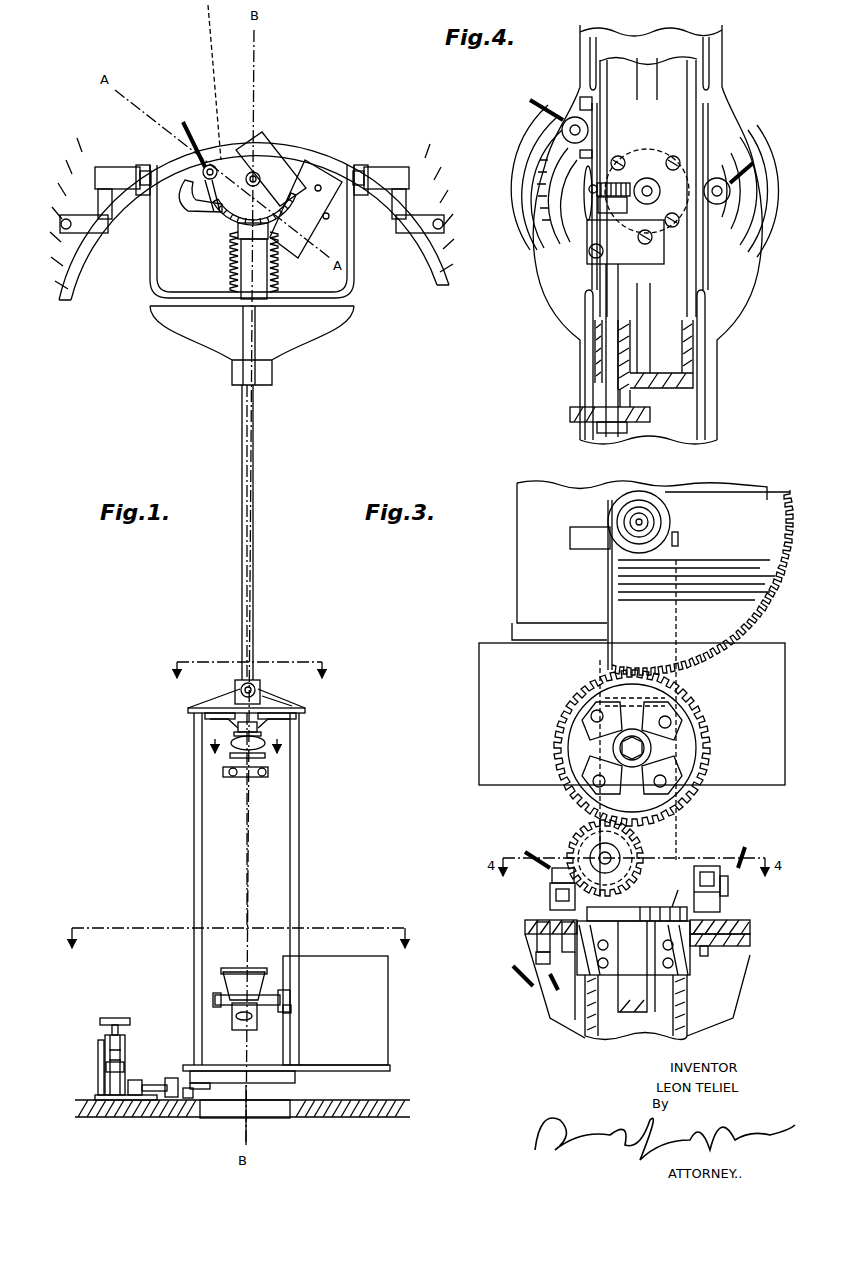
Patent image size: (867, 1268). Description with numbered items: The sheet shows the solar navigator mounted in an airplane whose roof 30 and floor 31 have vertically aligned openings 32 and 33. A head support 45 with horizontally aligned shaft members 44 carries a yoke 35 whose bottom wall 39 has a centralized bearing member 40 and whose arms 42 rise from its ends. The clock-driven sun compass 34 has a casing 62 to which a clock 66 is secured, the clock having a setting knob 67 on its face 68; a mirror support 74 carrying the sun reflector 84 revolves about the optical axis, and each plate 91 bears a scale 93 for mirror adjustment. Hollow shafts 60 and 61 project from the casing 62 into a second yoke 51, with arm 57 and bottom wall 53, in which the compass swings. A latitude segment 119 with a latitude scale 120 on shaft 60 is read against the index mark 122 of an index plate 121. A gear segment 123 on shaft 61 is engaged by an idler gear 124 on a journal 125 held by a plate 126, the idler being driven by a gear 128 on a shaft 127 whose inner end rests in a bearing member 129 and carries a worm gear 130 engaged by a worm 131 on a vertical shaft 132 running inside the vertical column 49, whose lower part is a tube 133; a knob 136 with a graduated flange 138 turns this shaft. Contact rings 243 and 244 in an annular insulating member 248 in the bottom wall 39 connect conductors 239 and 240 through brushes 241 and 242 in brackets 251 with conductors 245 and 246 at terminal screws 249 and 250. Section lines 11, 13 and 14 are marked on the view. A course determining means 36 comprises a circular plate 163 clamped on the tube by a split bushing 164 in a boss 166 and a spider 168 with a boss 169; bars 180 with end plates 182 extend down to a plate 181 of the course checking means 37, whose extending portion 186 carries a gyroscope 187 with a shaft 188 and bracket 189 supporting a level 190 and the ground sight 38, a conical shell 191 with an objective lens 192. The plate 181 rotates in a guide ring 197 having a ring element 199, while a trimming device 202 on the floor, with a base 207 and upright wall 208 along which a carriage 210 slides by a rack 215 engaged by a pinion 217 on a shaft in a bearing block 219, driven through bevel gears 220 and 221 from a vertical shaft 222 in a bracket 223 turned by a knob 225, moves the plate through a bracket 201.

In FIG. 1, the roof 30 is at (430, 62).
In FIG. 1, the opening 32 is at (352, 60).
In FIG. 1, the shaft members 44 is at (146, 168).
In FIG. 1, the head support 45 is at (100, 199).
In FIG. 1, the arms 42 is at (152, 240).
In FIG. 1, the yoke 35 is at (330, 300).
In FIG. 1, the bottom wall 39 is at (305, 302).
In FIG. 4, the bottom wall 39 is at (744, 234).
In FIG. 3, the bottom wall 39 is at (748, 958).
In FIG. 1, the bearing member 40 is at (240, 340).
In FIG. 1, the vertical column 49 is at (254, 545).
In FIG. 1, the tube 133 is at (240, 600).
In FIG. 1, the hollow shaft 60 is at (256, 172).
In FIG. 1, the sun compass 34 is at (290, 185).
In FIG. 1, the casing 62 is at (276, 162).
In FIG. 3, the casing 62 is at (526, 557).
In FIG. 1, the clock 66 is at (322, 178).
In FIG. 3, the clock 66 is at (490, 662).
In FIG. 1, the setting knob 67 is at (310, 187).
In FIG. 1, the face 68 is at (327, 222).
In FIG. 1, the latitude scale 120 is at (240, 230).
In FIG. 1, the index plate 121 is at (238, 262).
In FIG. 1, the index mark 122 is at (272, 255).
In FIG. 1, the mirror support 74 is at (186, 164).
In FIG. 1, the mirror 84 is at (212, 164).
In FIG. 1, the plate 91 is at (215, 214).
In FIG. 1, the scale 93 is at (192, 212).
In FIG. 1, the latitude segment 119 is at (218, 140).
In FIG. 1, the section line 11- 11 is at (249, 668).
In FIG. 1, the boss 169 is at (237, 684).
In FIG. 1, the boss 166 is at (218, 700).
In FIG. 1, the spider 168 is at (276, 702).
In FIG. 1, the bars 180 is at (194, 824).
In FIG. 1, the plates 182 is at (300, 712).
In FIG. 1, the course determining means 36 is at (208, 721).
In FIG. 1, the section line 13- 13 is at (247, 738).
In FIG. 1, the circular plate 163 is at (262, 718).
In FIG. 1, the split bushing 164 is at (264, 742).
In FIG. 1, the flange 138 is at (224, 764).
In FIG. 1, the knob 136 is at (254, 778).
In FIG. 1, the course checking means 37 is at (226, 906).
In FIG. 1, the section line 14- 14 is at (242, 939).
In FIG. 1, the gyroscope 187 is at (388, 988).
In FIG. 1, the ground sight 38 is at (230, 980).
In FIG. 1, the conical shell 191 is at (236, 970).
In FIG. 1, the objective lens 192 is at (251, 1029).
In FIG. 1, the level 190 is at (214, 996).
In FIG. 1, the bracket 189 is at (252, 1000).
In FIG. 1, the shaft 188 is at (290, 1012).
In FIG. 1, the plate 181 is at (222, 1064).
In FIG. 1, the ring element 199 is at (296, 1074).
In FIG. 1, the extending portion 186 is at (370, 1066).
In FIG. 1, the floor 31 is at (335, 1118).
In FIG. 1, the opening 33 is at (280, 1110).
In FIG. 1, the guide ring 197 is at (258, 1090).
In FIG. 1, the knob 225 is at (115, 1017).
In FIG. 1, the bracket 223 is at (104, 1042).
In FIG. 1, the trimming device 202 is at (99, 1060).
In FIG. 1, the vertical shaft 222 is at (106, 1068).
In FIG. 1, the bevel gear 221 is at (110, 1096).
In FIG. 1, the bearing block 219 is at (134, 1080).
In FIG. 1, the pinion 217 is at (155, 1085).
In FIG. 1, the carriage 210 is at (170, 1078).
In FIG. 1, the bracket 201 is at (188, 1098).
In FIG. 1, the rack 215 is at (150, 1098).
In FIG. 1, the base 207 is at (118, 1100).
In FIG. 1, the wall 208 is at (168, 1100).
In FIG. 1, the bevel gear 220 is at (97, 1100).
In FIG. 4, the bottom wall 53 is at (712, 272).
In FIG. 3, the bottom wall 53 is at (685, 870).
In FIG. 4, the yoke 51 is at (692, 308).
In FIG. 3, the yoke 51 is at (606, 664).
In FIG. 4, the vertical shaft 132 is at (649, 182).
In FIG. 4, the worm 131 is at (640, 176).
In FIG. 4, the worm gear 130 is at (598, 198).
In FIG. 4, the contact ring 243 is at (584, 194).
In FIG. 3, the contact ring 243 is at (690, 948).
In FIG. 4, the bearing member 129 is at (588, 242).
In FIG. 4, the shaft 127 is at (605, 288).
In FIG. 3, the shaft 127 is at (592, 840).
In FIG. 4, the gear 128 is at (575, 422).
In FIG. 3, the gear 128 is at (580, 845).
In FIG. 4, the contact ring 244 is at (552, 175).
In FIG. 3, the contact ring 244 is at (752, 925).
In FIG. 4, the annular insulating member 248 is at (555, 165).
In FIG. 3, the annular insulating member 248 is at (526, 922).
In FIG. 4, the brackets 251 is at (566, 120).
In FIG. 3, the brackets 251 is at (548, 896).
In FIG. 4, the conductor 240 is at (531, 104).
In FIG. 3, the conductor 240 is at (524, 852).
In FIG. 4, the conductor 239 is at (752, 166).
In FIG. 3, the conductor 239 is at (747, 845).
In FIG. 3, the gear segment 123 is at (770, 505).
In FIG. 3, the hollow shaft 61 is at (626, 520).
In FIG. 3, the idler gear 124 is at (690, 742).
In FIG. 3, the journal 125 is at (650, 750).
In FIG. 3, the plate 126 is at (670, 715).
In FIG. 3, the arm 57 is at (682, 826).
In FIG. 3, the brush 242 is at (550, 892).
In FIG. 3, the brush 241 is at (730, 907).
In FIG. 3, the conductor 246 is at (513, 967).
In FIG. 3, the terminal screw 250 is at (542, 966).
In FIG. 3, the conductor 245 is at (554, 994).
In FIG. 3, the terminal screw 249 is at (575, 1000).